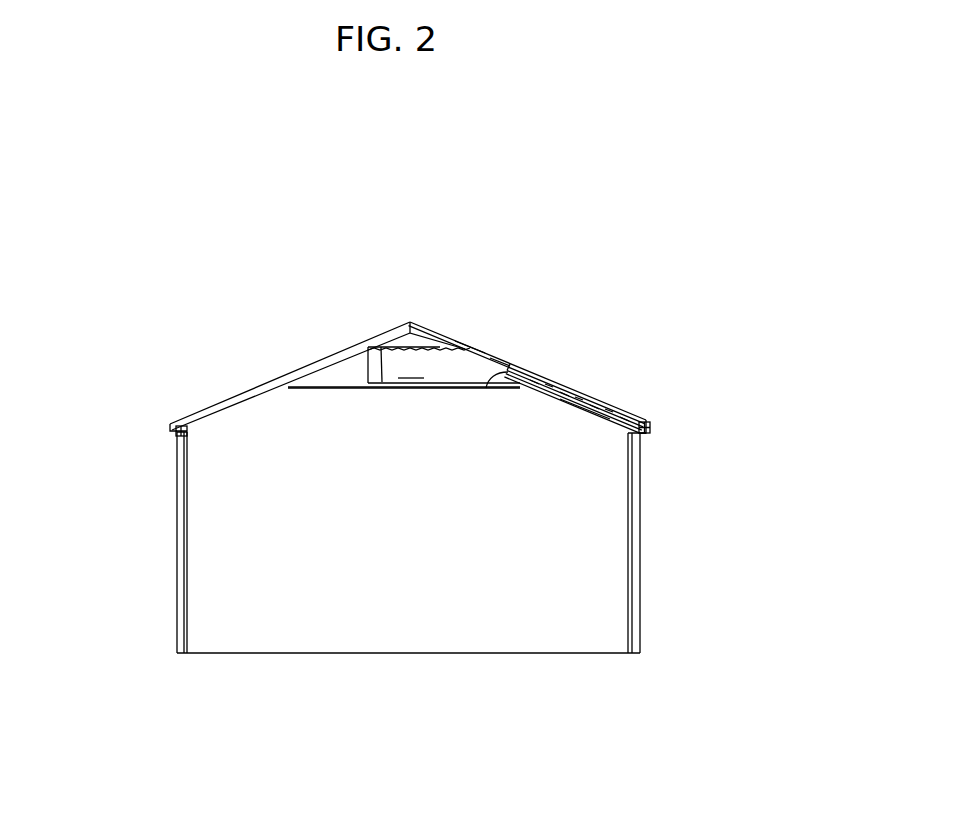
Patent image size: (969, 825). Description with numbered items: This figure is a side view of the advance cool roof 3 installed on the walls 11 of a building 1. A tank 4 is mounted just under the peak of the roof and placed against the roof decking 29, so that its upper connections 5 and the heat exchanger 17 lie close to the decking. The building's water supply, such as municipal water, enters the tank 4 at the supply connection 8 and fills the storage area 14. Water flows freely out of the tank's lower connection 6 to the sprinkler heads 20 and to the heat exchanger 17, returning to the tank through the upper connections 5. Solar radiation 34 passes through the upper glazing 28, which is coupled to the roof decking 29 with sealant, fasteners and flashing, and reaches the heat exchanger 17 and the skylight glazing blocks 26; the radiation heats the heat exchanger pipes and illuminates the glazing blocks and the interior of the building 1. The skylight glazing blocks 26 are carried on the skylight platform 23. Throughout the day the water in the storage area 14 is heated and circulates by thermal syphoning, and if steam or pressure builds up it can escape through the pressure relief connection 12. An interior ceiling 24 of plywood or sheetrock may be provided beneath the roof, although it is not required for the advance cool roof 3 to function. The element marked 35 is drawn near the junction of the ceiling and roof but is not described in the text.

The building 1 is at (277, 704).
The advance cool roof 3 is at (410, 225).
The tank 4 is at (497, 347).
The upper connections 5 is at (518, 358).
The lower connection 6 is at (381, 347).
The supply connection 8 is at (367, 378).
The walls 11 is at (177, 548).
The pressure relief connection 12 is at (398, 345).
The storage area 14 is at (444, 365).
The heat exchanger 17 is at (648, 411).
The sprinkler heads 20 is at (218, 418).
The skylight platform 23 is at (592, 418).
The interior ceiling 24 is at (573, 413).
The skylight glazing blocks 26 is at (603, 407).
The upper glazing 28 is at (578, 388).
The roof decking 29 is at (470, 345).
The solar radiation 34 is at (655, 243).
The vent opening 35 is at (491, 374).